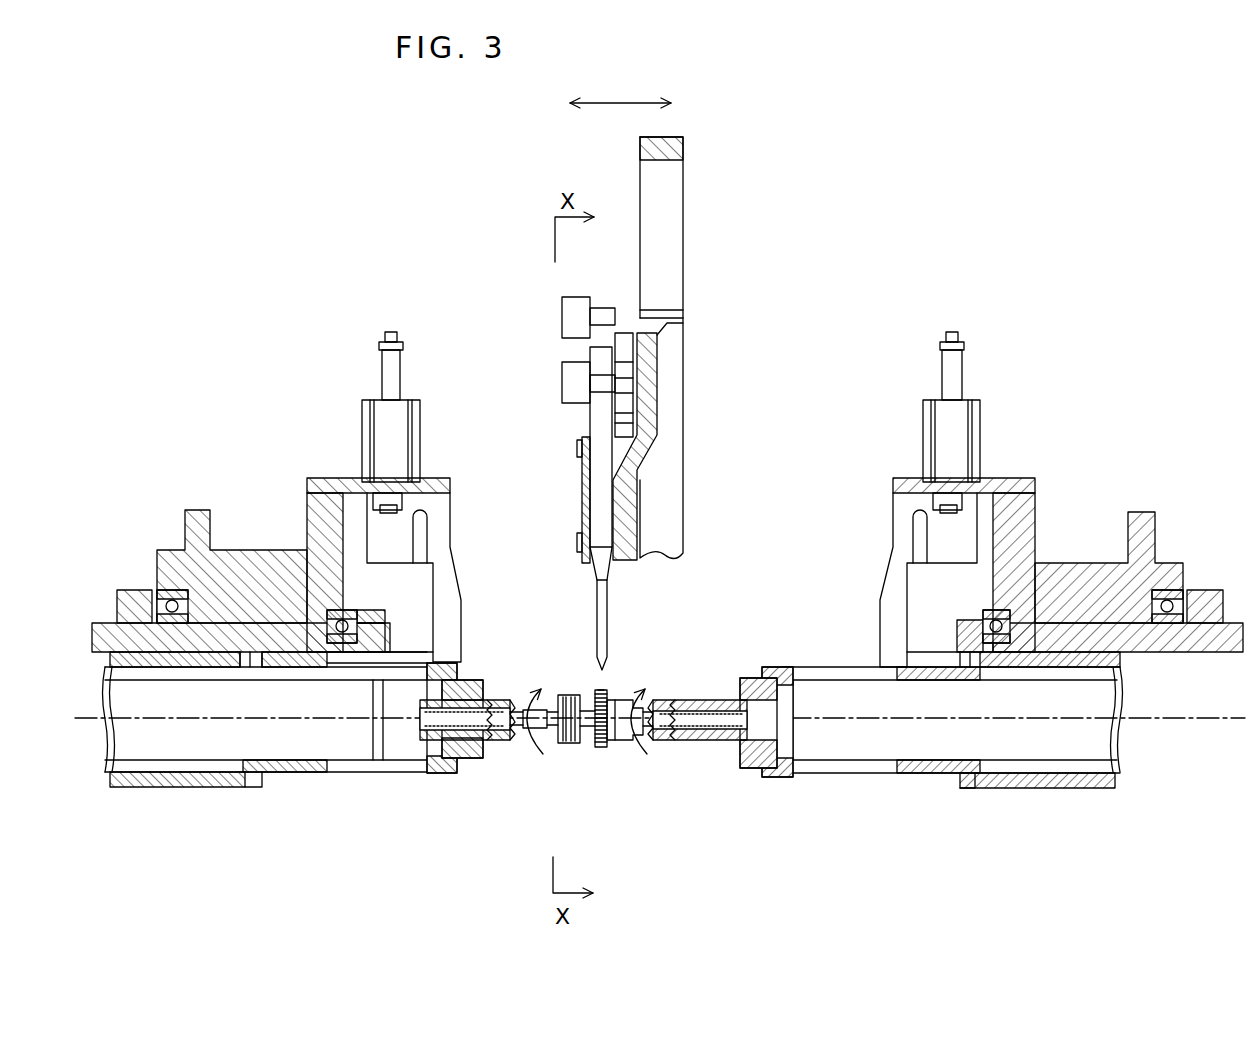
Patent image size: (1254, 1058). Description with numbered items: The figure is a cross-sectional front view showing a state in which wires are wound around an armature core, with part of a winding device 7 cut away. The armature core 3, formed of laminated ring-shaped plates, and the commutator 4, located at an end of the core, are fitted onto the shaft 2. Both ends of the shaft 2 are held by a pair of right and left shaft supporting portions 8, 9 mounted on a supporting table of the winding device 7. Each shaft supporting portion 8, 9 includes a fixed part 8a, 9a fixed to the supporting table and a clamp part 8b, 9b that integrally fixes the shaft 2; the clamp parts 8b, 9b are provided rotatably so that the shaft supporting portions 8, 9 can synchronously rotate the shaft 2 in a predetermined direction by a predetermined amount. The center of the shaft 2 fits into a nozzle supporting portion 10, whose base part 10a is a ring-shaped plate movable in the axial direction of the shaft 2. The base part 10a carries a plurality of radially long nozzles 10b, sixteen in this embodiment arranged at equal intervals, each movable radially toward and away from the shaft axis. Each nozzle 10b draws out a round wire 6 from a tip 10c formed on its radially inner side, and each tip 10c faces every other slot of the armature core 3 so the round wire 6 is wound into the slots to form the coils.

The shaft 2 is at (590, 730).
The armature core 3 is at (569, 750).
The commutator 4 is at (609, 752).
The round wire 6 is at (606, 685).
The winding device 7 is at (984, 288).
The shaft supporting portion 8 is at (306, 413).
The fixed part 8a is at (253, 583).
The clamp part 8b is at (495, 752).
The shaft supporting portion 9 is at (1067, 402).
The fixed part 9a is at (1085, 590).
The clamp part 9b is at (703, 744).
The nozzle supporting portion 10 is at (716, 190).
The base part 10a is at (648, 396).
The nozzle 10b is at (600, 515).
The tip 10c is at (603, 660).